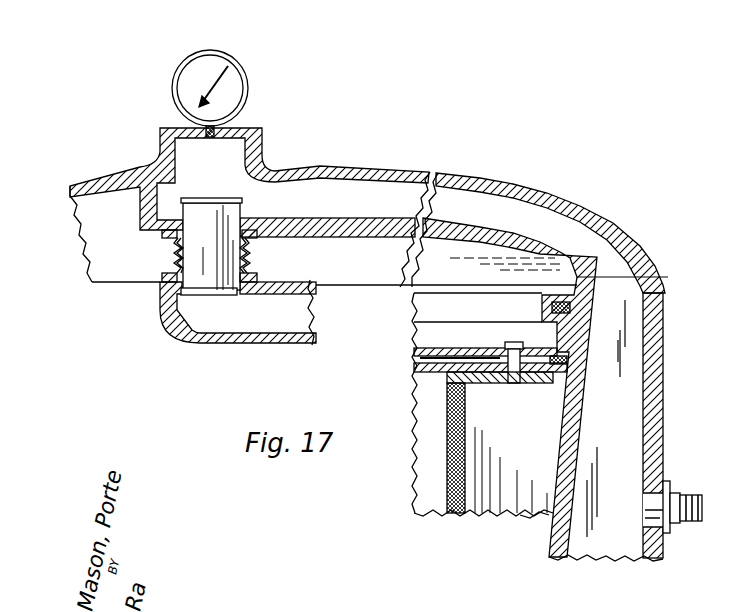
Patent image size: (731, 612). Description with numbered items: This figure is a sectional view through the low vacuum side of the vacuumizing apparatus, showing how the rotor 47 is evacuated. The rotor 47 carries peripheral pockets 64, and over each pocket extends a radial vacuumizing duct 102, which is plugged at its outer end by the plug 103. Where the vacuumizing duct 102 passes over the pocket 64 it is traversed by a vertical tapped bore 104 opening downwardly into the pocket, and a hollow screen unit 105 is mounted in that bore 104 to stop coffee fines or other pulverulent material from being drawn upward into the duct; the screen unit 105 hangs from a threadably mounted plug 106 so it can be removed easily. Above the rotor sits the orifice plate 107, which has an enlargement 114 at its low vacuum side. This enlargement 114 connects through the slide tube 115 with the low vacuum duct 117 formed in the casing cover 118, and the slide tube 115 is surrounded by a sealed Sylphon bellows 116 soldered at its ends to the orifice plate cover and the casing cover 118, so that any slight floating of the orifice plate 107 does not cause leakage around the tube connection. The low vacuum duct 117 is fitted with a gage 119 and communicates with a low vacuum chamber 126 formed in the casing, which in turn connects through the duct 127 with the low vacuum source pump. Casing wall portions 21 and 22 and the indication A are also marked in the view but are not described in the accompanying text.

The gage 119 is at (247, 82).
The slide tube 115 is at (237, 200).
The sealed Sylphon bellows 116 is at (247, 262).
The enlargement 114 is at (160, 297).
The orifice plate 107 is at (178, 320).
The low vacuum duct 117 is at (362, 187).
The casing cover 118 is at (503, 183).
The rotor 47 is at (422, 317).
The threadably mounted plug 106 is at (507, 344).
The radial vacuumizing duct 102 is at (420, 358).
The peripheral pocket 64 is at (450, 418).
The vertical tapped bore 104 is at (487, 448).
The hollow screen unit 105 is at (510, 457).
The plug 103 is at (518, 378).
The inner cylinder 22 is at (583, 332).
The outer cylinder 21 is at (660, 353).
The low vacuum chamber 126 is at (623, 407).
The duct 127 is at (682, 492).
The section plane A is at (670, 281).